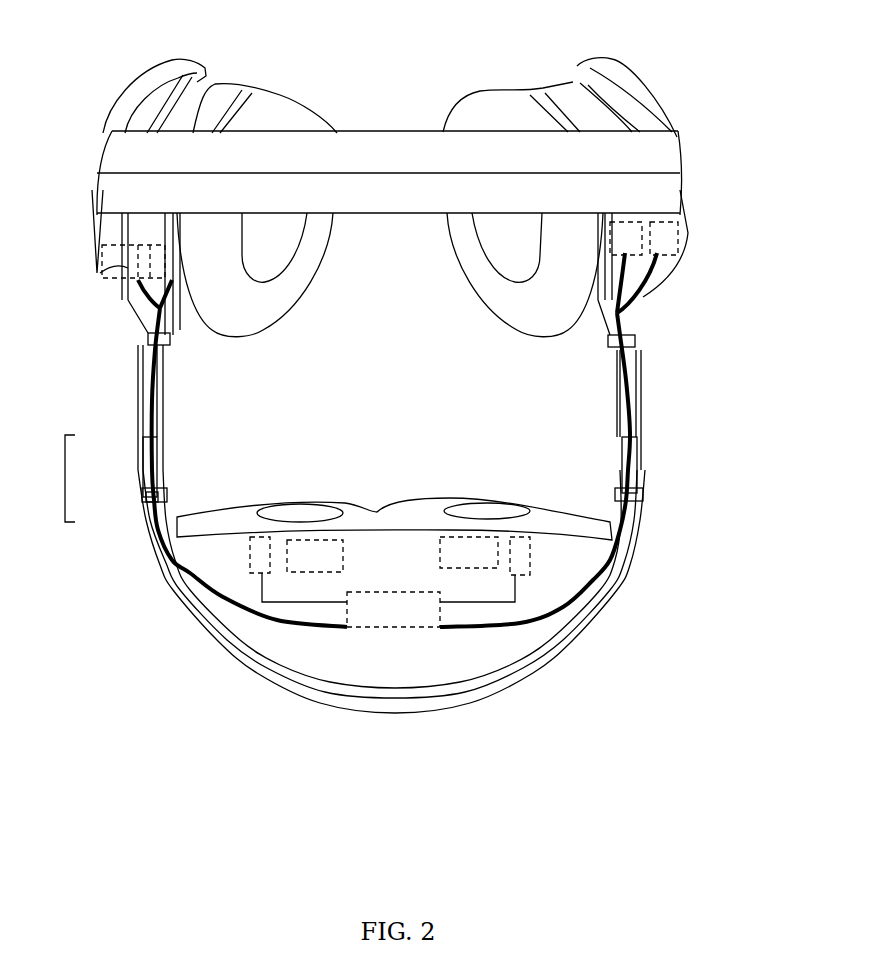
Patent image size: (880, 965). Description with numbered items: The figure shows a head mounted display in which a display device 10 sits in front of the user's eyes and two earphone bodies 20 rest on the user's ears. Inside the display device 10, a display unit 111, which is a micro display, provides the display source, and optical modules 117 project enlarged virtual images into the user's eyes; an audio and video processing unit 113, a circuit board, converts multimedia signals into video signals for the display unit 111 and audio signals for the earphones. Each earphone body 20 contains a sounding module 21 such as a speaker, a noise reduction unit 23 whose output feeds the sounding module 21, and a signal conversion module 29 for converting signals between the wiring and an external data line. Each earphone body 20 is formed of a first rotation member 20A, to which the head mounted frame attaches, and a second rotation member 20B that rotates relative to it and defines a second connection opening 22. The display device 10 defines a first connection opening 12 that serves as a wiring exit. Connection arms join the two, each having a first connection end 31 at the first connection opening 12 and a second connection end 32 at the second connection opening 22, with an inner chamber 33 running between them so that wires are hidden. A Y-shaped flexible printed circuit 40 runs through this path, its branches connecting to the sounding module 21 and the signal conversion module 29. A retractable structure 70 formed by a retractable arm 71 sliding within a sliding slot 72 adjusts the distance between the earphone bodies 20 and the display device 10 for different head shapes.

The display device 10 is at (377, 495).
The first connection opening 12 is at (155, 502).
The earphone body 20 is at (230, 80).
The first rotation member 20A is at (683, 208).
The second rotation member 20B is at (577, 103).
The sounding module 21 is at (105, 270).
The second connection opening 22 is at (143, 340).
The noise reduction unit 23 is at (95, 215).
The signal conversion module 29 is at (677, 253).
The first connection end 31 is at (160, 488).
The second connection end 32 is at (170, 345).
The inner chamber 33 is at (640, 395).
The flexible printed circuit 40 is at (625, 555).
The retractable structure 70 is at (87, 475).
The retractable arm 71 is at (146, 492).
The sliding slot 72 is at (143, 450).
The display unit 111 is at (255, 573).
The audio and video processing unit 113 is at (388, 617).
The optical module 117 is at (300, 573).